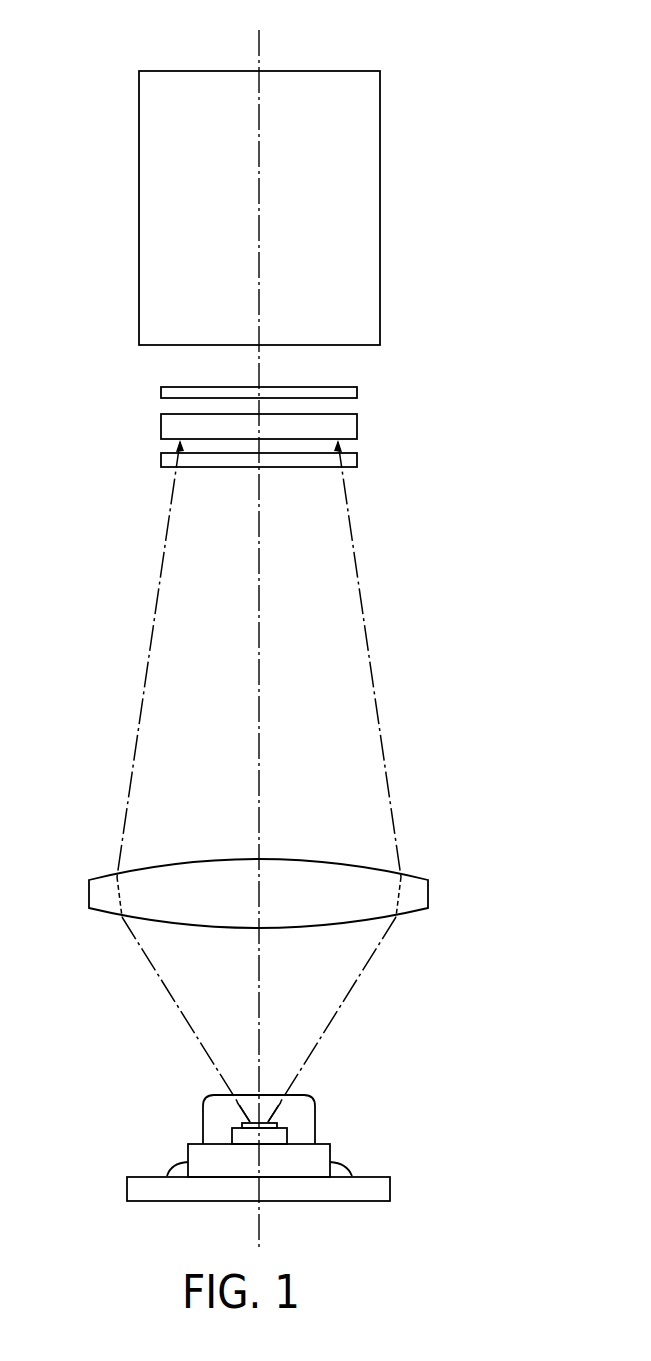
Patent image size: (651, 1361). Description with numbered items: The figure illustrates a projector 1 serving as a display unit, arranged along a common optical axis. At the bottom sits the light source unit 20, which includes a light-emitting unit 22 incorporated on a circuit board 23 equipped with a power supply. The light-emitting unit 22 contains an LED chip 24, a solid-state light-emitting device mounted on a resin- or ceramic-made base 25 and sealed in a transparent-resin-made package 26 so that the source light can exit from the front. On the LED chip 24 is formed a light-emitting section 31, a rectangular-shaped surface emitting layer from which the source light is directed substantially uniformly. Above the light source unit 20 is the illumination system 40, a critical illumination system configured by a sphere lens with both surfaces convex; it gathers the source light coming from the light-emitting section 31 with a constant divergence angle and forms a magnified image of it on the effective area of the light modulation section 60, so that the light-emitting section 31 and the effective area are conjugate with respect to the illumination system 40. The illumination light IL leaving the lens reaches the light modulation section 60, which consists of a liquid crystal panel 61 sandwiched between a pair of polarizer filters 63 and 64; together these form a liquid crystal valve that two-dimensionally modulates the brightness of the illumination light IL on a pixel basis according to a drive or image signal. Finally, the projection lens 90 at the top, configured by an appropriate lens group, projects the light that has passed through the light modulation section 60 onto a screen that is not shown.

The projector 1 is at (488, 68).
The projection lens 90 is at (362, 210).
The light modulation section 60 is at (339, 432).
The polarizer filter 64 is at (357, 392).
The liquid crystal panel 61 is at (357, 427).
The polarizer filter 63 is at (306, 462).
The illumination light IL is at (368, 650).
The illumination system 40 is at (420, 895).
The light source unit 20 is at (182, 1087).
The light-emitting section 31 is at (237, 1102).
The package 26 is at (302, 1110).
The LED chip 24 is at (287, 1130).
The light-emitting unit 22 is at (318, 1143).
The base 25 is at (318, 1157).
The circuit board 23 is at (382, 1180).